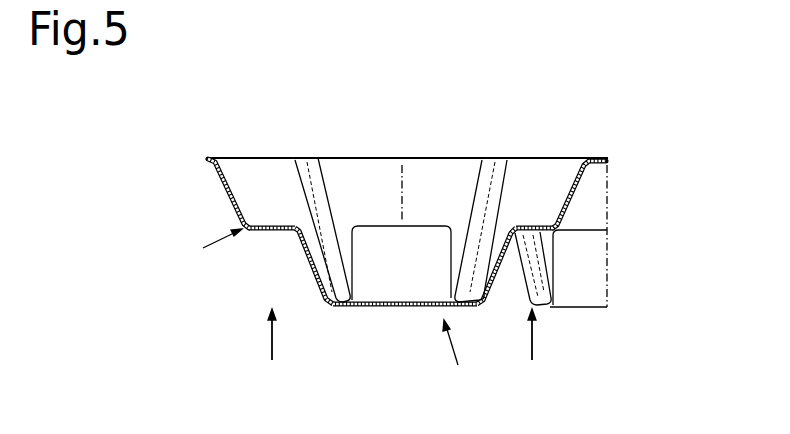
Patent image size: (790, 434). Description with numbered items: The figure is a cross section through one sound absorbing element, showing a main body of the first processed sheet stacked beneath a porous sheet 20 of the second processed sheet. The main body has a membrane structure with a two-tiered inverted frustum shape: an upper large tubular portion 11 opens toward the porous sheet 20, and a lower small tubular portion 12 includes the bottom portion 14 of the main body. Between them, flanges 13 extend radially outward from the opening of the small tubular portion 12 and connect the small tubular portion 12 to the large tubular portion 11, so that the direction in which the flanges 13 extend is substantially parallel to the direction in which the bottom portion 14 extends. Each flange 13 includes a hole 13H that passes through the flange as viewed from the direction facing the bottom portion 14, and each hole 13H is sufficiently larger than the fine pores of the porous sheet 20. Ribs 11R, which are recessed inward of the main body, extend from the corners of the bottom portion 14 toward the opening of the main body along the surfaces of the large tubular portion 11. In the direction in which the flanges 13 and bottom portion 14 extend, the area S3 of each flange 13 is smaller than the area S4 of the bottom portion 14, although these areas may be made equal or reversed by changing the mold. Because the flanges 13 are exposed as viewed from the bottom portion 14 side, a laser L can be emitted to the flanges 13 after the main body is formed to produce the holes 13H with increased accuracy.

The porous sheet 20 is at (441, 157).
The large tubular portion 11 is at (226, 184).
The rib 11R is at (326, 165).
The flange 13 is at (283, 224).
The hole 13H is at (270, 232).
The bottom portion 14 is at (391, 308).
The small tubular portion 12 is at (488, 297).
The area of flange S3 is at (207, 246).
The area of bottom portion S4 is at (459, 356).
The laser L is at (268, 341).